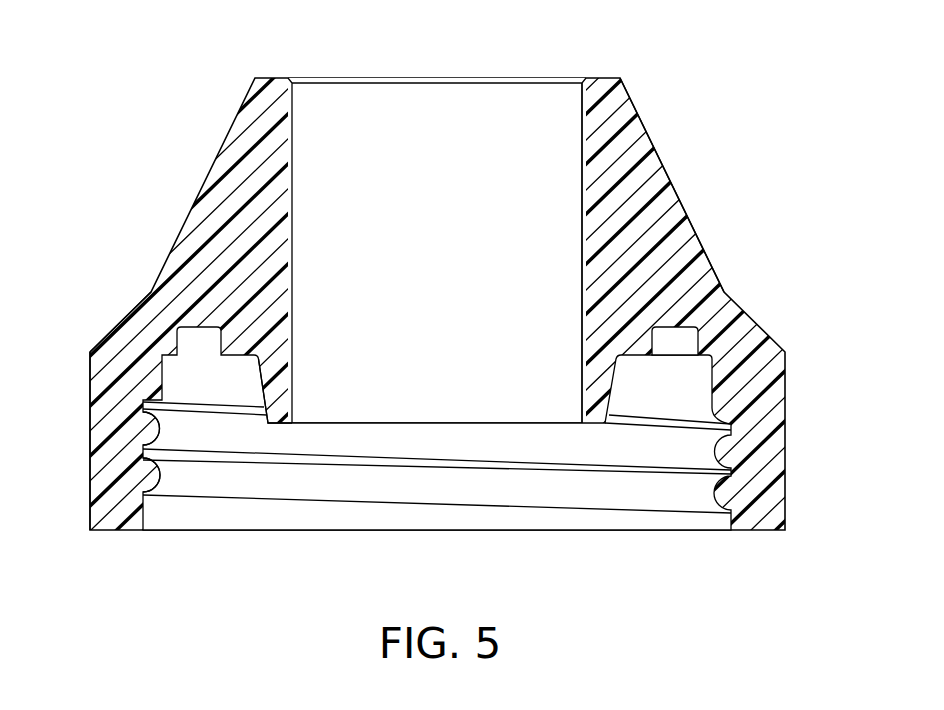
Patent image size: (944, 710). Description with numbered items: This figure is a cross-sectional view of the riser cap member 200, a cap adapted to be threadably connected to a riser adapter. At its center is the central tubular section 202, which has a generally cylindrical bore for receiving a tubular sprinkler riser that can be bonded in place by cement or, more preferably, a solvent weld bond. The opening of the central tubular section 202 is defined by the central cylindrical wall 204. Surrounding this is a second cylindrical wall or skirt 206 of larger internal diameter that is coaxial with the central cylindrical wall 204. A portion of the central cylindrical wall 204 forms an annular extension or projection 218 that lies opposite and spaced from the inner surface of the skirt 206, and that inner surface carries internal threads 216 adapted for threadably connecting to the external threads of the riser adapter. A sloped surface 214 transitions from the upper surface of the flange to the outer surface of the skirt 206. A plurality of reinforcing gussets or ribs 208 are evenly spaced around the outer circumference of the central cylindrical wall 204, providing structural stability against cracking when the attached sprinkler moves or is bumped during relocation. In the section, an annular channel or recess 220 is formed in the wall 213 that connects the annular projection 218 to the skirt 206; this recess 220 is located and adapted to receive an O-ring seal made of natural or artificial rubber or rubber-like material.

The riser cap member 200 is at (748, 174).
The central tubular section 202 is at (398, 116).
The central cylindrical wall 204 is at (583, 128).
The skirt 206 is at (90, 443).
The ribs 208 is at (661, 179).
The wall 213 is at (235, 349).
The sloped surface 214 is at (120, 325).
The internal threads 216 is at (148, 450).
The annular projection 218 is at (288, 420).
The annular recess 220 is at (670, 342).